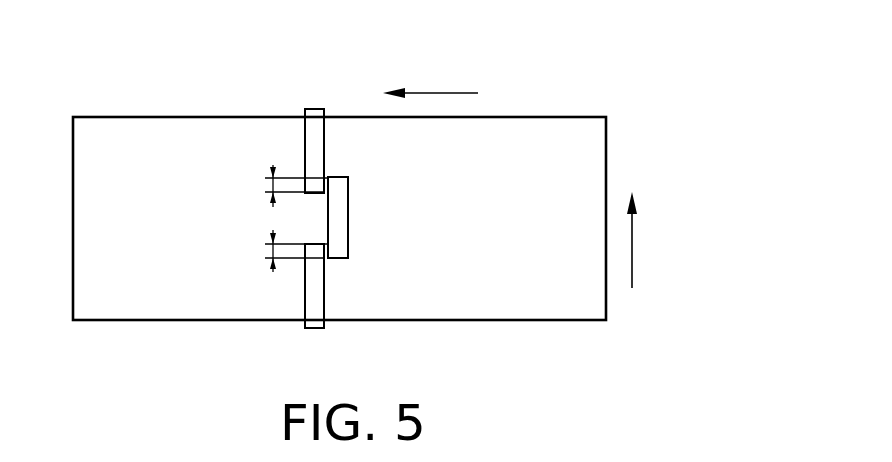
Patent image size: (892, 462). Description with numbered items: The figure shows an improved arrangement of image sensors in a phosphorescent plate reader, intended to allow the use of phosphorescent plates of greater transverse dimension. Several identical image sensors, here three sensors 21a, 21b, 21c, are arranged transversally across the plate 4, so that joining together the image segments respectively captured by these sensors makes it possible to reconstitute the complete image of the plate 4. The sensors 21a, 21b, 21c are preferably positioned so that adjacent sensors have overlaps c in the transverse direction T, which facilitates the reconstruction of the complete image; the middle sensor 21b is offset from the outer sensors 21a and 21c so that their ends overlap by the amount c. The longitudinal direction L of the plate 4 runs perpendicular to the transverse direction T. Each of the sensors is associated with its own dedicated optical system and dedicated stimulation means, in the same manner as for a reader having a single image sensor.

The phosphorescent plate 4 is at (588, 178).
The image sensor 21a is at (305, 143).
The image sensor 21b is at (348, 220).
The image sensor 21c is at (302, 292).
The overlap c is at (287, 218).
The longitudinal direction L is at (430, 78).
The transverse direction T is at (644, 240).